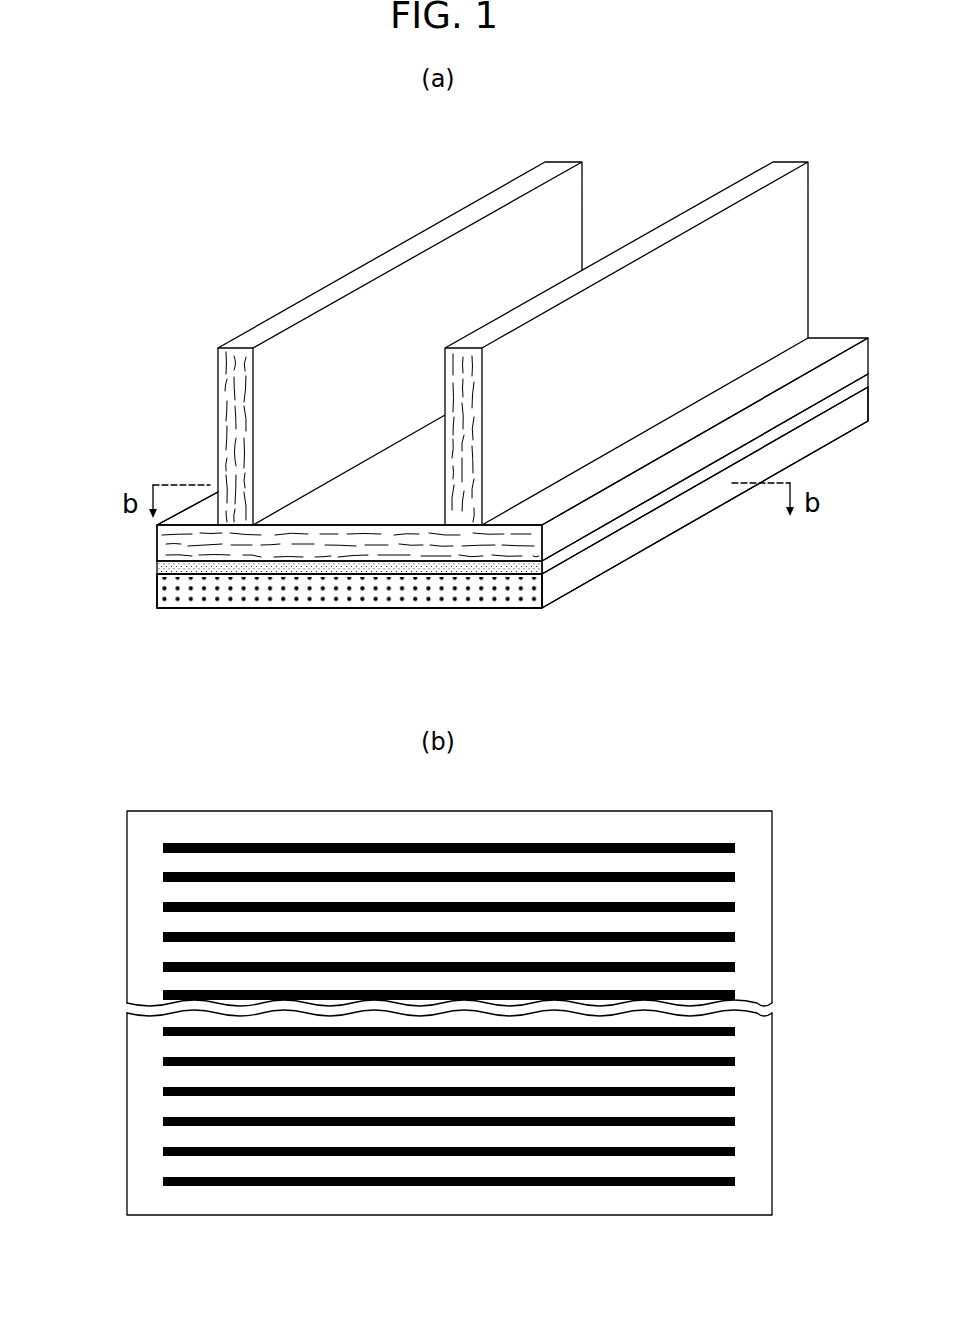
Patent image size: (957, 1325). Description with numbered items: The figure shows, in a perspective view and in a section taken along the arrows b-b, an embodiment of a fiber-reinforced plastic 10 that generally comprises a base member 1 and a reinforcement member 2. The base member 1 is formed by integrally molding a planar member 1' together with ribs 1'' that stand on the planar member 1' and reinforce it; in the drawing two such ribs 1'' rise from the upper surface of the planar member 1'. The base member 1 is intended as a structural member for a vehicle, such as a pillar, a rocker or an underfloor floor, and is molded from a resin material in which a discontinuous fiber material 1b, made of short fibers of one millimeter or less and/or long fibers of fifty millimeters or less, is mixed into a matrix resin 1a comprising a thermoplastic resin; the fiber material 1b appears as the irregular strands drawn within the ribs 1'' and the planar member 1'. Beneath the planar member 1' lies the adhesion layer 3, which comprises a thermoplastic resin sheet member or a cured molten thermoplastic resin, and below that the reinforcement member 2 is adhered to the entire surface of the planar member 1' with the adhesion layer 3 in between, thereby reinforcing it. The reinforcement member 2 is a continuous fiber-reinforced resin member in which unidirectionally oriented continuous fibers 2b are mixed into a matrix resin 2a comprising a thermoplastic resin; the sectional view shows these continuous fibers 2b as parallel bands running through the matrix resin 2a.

The fiber-reinforced plastic 10 is at (318, 224).
The base member 1 is at (133, 498).
The ribs 1'' is at (445, 343).
The planar member 1' is at (475, 449).
The matrix resin 1a is at (218, 364).
The discontinuous fiber material 1b is at (226, 408).
The reinforcement member 2 is at (157, 594).
The matrix resin 2a is at (241, 607).
The continuous fibers 2b is at (333, 593).
The adhesion layer 3 is at (157, 568).